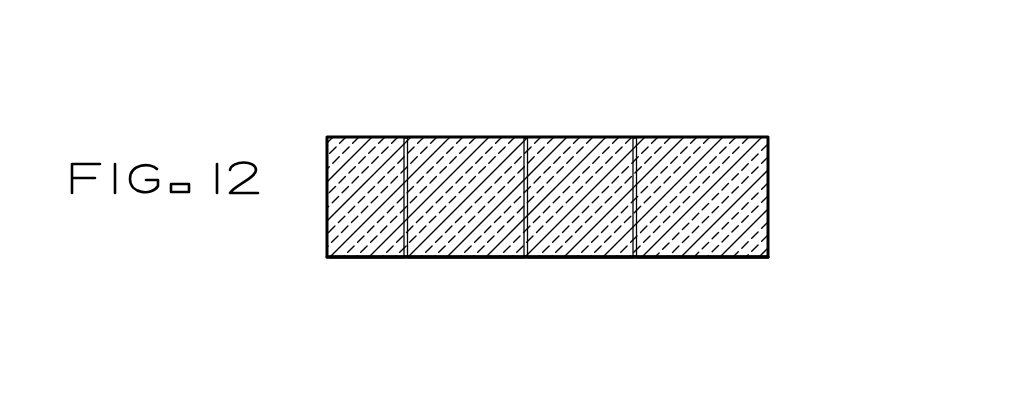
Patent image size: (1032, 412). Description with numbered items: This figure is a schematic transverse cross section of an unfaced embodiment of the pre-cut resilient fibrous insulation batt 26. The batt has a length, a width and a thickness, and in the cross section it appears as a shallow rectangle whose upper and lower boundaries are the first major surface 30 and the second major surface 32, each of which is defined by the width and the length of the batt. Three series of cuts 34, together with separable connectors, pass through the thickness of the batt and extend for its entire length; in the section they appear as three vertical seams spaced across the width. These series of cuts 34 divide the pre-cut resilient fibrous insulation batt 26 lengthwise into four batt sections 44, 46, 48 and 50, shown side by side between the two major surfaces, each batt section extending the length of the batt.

The pre-cut resilient fibrous insulation batt 26 is at (471, 206).
The first major surface 30 is at (471, 194).
The second major surface 32 is at (666, 270).
The cuts 34 is at (406, 173).
The batt section 44 is at (728, 217).
The batt section 46 is at (580, 230).
The batt section 48 is at (475, 230).
The batt section 50 is at (370, 228).